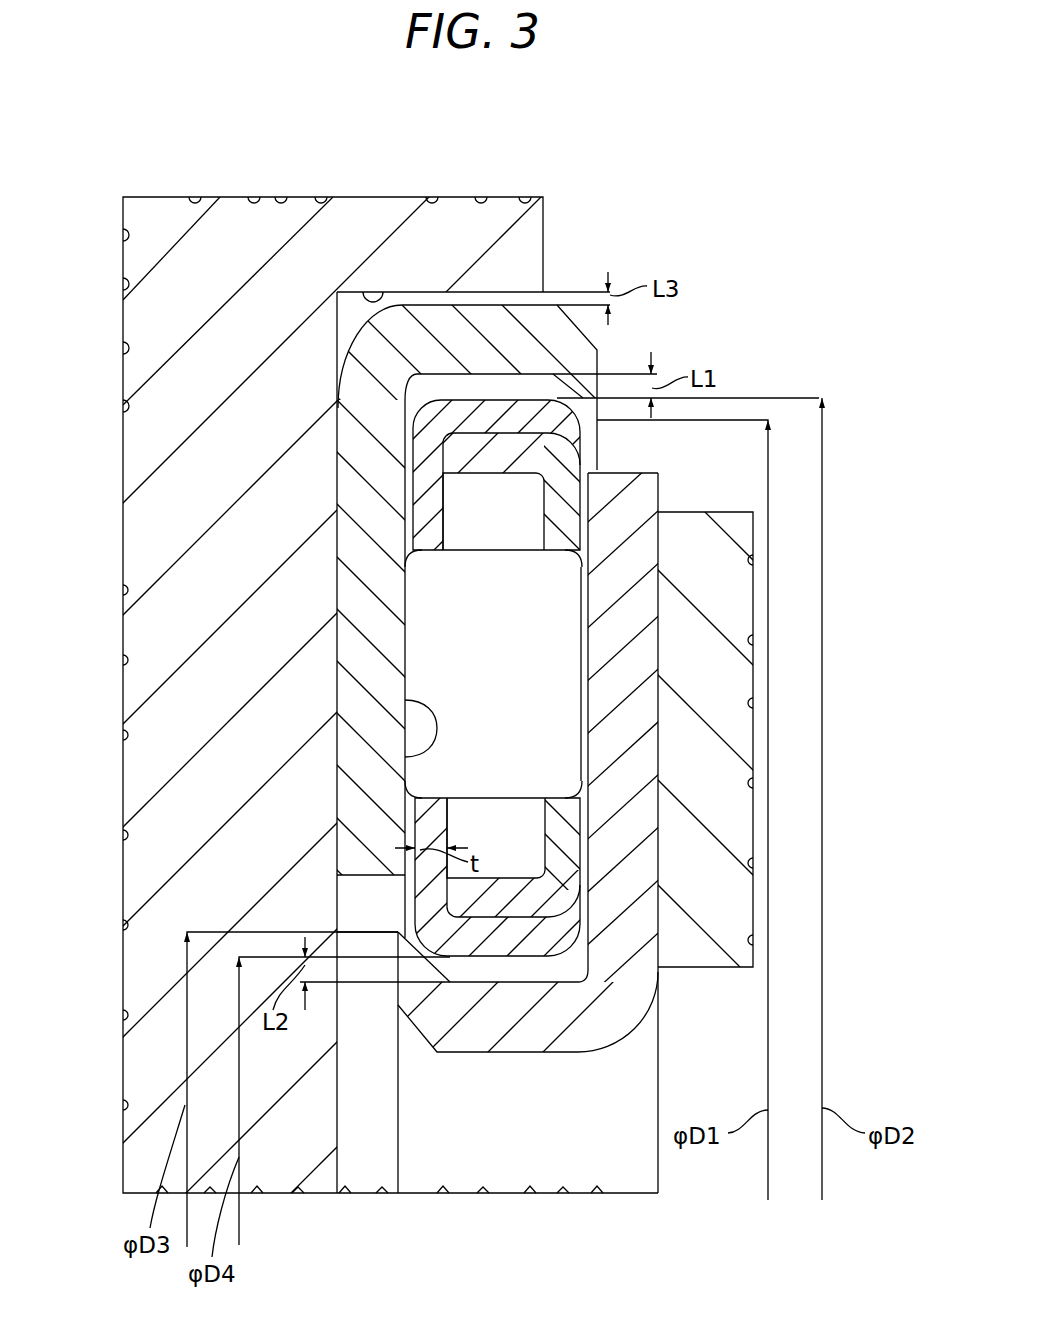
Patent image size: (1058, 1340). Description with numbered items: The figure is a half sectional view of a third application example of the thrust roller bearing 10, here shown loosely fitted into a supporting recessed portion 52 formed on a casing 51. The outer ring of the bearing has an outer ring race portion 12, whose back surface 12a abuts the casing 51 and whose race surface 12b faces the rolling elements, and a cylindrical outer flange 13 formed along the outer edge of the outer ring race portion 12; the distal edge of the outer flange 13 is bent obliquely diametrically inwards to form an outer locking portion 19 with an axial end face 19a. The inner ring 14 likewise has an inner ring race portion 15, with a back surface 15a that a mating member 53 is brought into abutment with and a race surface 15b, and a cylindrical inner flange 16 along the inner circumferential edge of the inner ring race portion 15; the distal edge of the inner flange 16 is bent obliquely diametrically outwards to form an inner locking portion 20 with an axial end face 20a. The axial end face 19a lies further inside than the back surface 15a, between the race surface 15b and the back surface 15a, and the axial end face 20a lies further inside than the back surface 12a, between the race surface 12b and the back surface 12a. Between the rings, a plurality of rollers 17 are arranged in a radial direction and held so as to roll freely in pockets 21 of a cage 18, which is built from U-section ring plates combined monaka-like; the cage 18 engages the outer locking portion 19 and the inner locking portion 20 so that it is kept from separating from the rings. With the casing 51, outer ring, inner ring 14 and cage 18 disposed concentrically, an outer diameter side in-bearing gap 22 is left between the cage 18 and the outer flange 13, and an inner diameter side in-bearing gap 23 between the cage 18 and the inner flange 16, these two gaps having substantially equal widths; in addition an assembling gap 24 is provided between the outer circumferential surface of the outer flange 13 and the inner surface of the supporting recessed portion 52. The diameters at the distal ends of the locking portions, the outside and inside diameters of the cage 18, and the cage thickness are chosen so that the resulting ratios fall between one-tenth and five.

The thrust roller bearing 10 is at (724, 286).
The outer ring race portion 12 is at (355, 590).
The back surface of the outer ring race portion 12a is at (337, 643).
The race surface of the outer ring race portion 12b is at (405, 757).
The outer flange 13 is at (483, 315).
The inner ring 14 is at (640, 1038).
The inner ring race portion 15 is at (648, 742).
The back surface of the inner ring race portion 15a is at (658, 598).
The race surface of the inner ring race portion 15b is at (588, 612).
The inner flange 16 is at (520, 1035).
The rollers 17 is at (420, 685).
The cage 18 is at (557, 889).
The outer locking portion 19 is at (470, 400).
The axial end face of the outer locking portion 19a is at (598, 360).
The inner locking portion 20 is at (427, 972).
The axial end face of the inner locking portion 20a is at (398, 993).
The pockets 21 is at (448, 798).
The outer diameter side in-bearing gap 22 is at (483, 385).
The inner diameter side in-bearing gap 23 is at (495, 968).
The assembling gap 24 is at (512, 297).
The casing 51 is at (547, 203).
The supporting recessed portion 52 is at (364, 287).
The mating member 53 is at (690, 512).